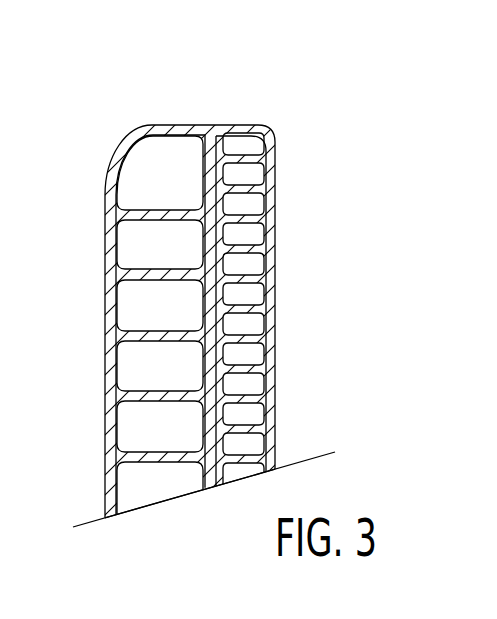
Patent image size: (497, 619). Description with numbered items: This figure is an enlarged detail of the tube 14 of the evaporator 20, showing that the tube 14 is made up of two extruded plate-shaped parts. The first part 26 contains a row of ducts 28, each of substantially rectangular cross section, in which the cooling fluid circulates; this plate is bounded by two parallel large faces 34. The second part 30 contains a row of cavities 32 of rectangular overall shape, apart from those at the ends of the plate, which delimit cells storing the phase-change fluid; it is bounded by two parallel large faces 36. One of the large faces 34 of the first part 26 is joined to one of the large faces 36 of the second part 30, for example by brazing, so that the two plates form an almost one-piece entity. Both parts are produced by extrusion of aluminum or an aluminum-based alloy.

The tube 14 is at (184, 286).
The heat exchanger 20 is at (30, 5).
The first part 26 is at (277, 274).
The ducts 28 is at (253, 268).
The second part 30 is at (123, 144).
The cavities 32 is at (140, 241).
The large faces 34 is at (274, 400).
The large faces 36 is at (105, 410).